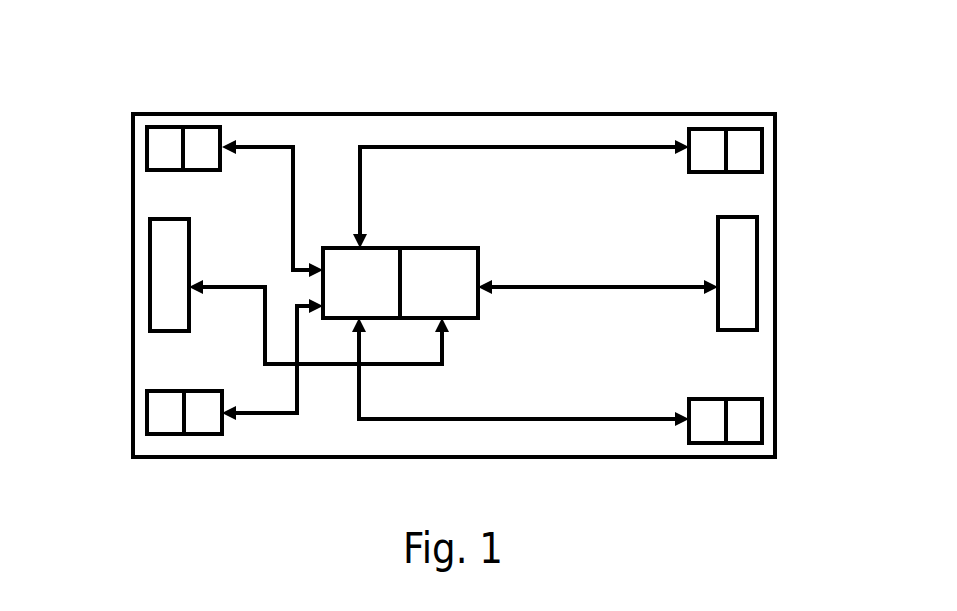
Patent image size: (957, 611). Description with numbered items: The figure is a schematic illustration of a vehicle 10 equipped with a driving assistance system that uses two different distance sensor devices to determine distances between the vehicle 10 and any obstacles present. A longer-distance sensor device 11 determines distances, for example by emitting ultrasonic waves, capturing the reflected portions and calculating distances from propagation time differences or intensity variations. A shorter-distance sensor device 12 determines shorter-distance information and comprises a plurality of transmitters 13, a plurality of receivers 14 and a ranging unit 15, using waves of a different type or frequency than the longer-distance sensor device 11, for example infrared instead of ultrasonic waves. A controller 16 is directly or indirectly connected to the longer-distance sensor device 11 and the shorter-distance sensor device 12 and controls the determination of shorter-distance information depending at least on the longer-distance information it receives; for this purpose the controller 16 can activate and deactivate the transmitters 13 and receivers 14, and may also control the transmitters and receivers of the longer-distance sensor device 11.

The vehicle 10 is at (413, 114).
The longer-distance sensor device 11 is at (150, 270).
The shorter-distance sensor device 12 is at (461, 253).
The transmitters 13 is at (166, 127).
The receivers 14 is at (204, 127).
The ranging unit 15 is at (361, 283).
The controller 16 is at (439, 283).